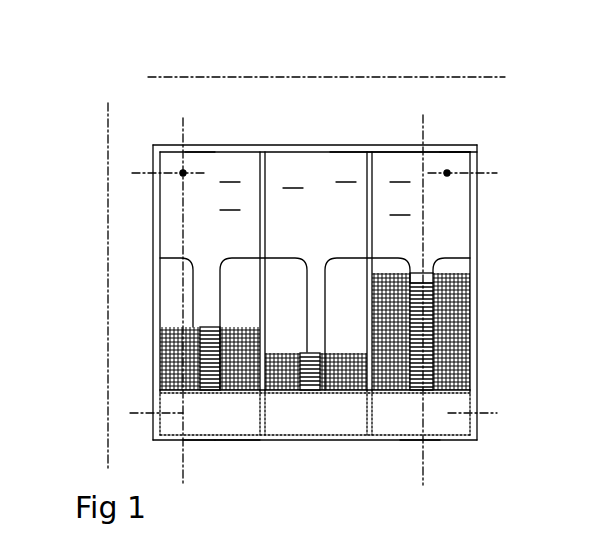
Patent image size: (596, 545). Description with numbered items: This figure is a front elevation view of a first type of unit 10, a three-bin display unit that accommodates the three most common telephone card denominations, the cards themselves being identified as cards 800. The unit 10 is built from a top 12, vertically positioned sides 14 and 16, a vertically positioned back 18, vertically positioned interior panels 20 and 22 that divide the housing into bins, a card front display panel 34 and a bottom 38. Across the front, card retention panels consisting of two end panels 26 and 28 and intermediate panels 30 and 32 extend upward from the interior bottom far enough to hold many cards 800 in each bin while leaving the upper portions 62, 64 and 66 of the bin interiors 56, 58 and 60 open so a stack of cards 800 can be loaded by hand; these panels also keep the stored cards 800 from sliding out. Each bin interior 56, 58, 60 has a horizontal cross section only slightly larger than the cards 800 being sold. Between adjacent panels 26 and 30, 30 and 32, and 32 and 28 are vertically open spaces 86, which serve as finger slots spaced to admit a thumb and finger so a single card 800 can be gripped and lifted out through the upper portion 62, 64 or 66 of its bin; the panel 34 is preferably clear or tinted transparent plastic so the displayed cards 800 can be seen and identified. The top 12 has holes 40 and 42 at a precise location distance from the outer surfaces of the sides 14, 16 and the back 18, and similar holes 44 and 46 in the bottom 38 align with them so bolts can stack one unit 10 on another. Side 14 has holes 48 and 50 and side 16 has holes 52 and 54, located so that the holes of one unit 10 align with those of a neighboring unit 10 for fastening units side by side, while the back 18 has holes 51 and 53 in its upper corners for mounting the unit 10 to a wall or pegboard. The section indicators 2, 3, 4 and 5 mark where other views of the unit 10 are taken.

The section line 2- 2 is at (66, 114).
The section line 3- 3 is at (160, 102).
The section line 4- 4 is at (141, 130).
The section line 5- 5 is at (381, 129).
The unit 10 is at (264, 84).
The top 12 is at (320, 150).
The side 14 is at (153, 237).
The side 16 is at (477, 227).
The back 18 is at (340, 150).
The interior panel 20 is at (268, 193).
The interior panel 22 is at (365, 212).
The end panel 26 is at (188, 270).
The end panel 28 is at (453, 268).
The intermediate panel 30 is at (277, 280).
The intermediate panel 32 is at (352, 277).
The card front display panel 34 is at (293, 422).
The bottom 38 is at (234, 442).
The hole 40 is at (198, 148).
The hole 42 is at (453, 147).
The hole 44 is at (190, 442).
The hole 46 is at (425, 440).
The hole 48 is at (135, 173).
The hole 50 is at (153, 413).
The hole 51 is at (183, 173).
The hole 52 is at (478, 163).
The hole 53 is at (450, 175).
The hole 54 is at (475, 415).
The bin interior 56 is at (230, 200).
The bin interior 58 is at (293, 178).
The bin interior 60 is at (400, 205).
The upper portion 62 is at (230, 172).
The upper portion 64 is at (346, 172).
The upper portion 66 is at (400, 172).
The vertically open space 86 is at (208, 305).
The card 800 is at (207, 327).